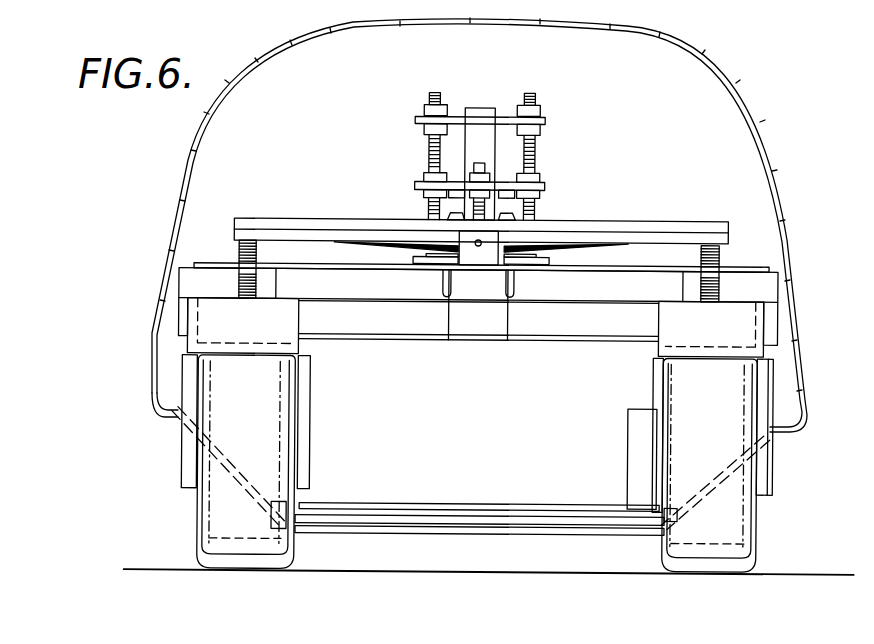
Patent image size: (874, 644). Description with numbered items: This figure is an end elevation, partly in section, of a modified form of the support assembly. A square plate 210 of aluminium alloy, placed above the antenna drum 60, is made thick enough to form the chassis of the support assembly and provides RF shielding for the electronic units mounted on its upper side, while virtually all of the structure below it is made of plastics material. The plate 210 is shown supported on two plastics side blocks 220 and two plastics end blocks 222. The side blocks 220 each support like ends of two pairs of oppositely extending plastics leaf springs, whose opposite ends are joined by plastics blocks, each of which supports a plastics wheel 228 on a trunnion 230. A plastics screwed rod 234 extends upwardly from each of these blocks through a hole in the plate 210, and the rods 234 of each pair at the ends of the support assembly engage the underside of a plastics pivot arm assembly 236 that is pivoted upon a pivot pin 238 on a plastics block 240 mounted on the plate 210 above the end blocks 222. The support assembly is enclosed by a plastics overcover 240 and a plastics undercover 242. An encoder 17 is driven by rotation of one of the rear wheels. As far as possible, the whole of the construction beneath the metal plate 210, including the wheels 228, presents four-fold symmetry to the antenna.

The encoder 17 is at (637, 425).
The antenna drum 60 is at (490, 443).
The square plate 210 is at (362, 270).
The side blocks 220 is at (190, 279).
The end blocks 222 is at (478, 353).
The wheel 228 is at (222, 513).
The trunnion 230 is at (653, 374).
The screwed rod 234 is at (240, 252).
The pivot arm assembly 236 is at (250, 221).
The pivot pin 238 is at (535, 229).
The overcover 240 is at (182, 188).
The undercover 242 is at (495, 530).